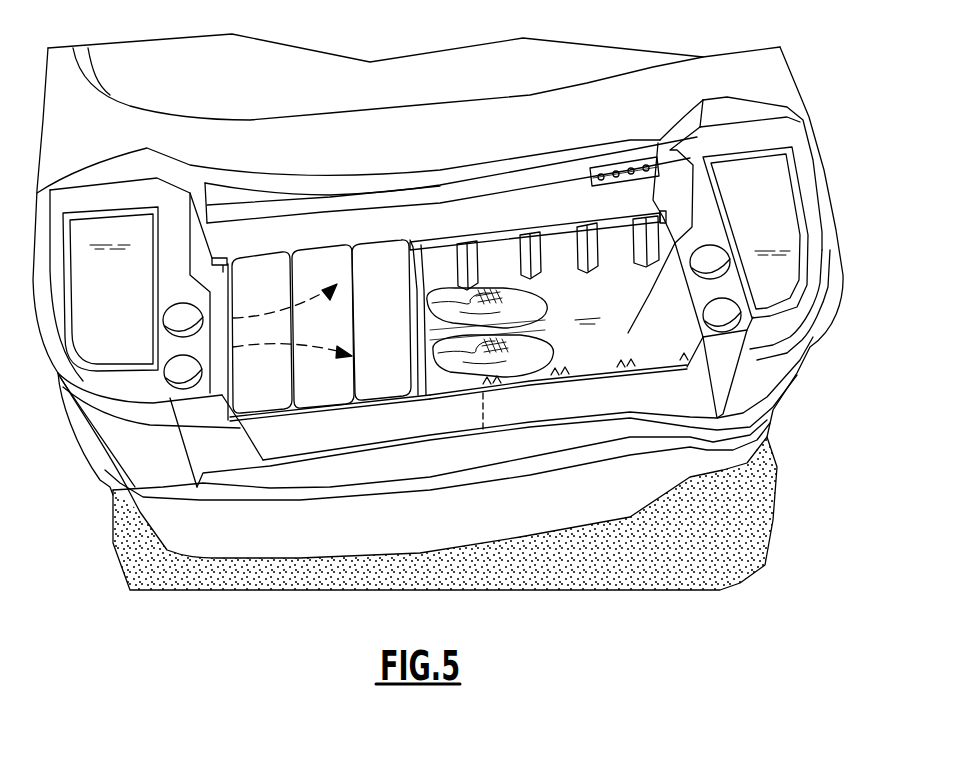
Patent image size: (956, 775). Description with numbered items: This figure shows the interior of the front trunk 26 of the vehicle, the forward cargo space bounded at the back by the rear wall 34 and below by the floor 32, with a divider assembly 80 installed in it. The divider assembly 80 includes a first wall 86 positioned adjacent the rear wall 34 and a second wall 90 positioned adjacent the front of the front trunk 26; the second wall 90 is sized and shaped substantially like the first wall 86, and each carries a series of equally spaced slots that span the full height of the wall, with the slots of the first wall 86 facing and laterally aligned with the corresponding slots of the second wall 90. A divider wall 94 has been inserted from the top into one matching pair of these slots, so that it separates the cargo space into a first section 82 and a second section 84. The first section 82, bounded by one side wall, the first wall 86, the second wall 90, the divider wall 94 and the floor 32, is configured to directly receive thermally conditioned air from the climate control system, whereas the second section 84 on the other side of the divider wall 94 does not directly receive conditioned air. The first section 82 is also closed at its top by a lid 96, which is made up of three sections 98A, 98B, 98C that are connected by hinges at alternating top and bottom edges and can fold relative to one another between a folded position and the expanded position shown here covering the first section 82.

The front trunk 26 is at (682, 168).
The rear wall 34 is at (520, 210).
The divider wall 94 is at (413, 277).
The first wall 86 is at (620, 243).
The second section 84 is at (633, 307).
The second wall 90 is at (650, 393).
The section 98A is at (247, 377).
The section 98B is at (317, 392).
The section 98C is at (383, 380).
The first section 82 is at (330, 423).
The lid 96 is at (397, 413).
The floor 32 is at (587, 350).
The divider assembly 80 is at (577, 447).